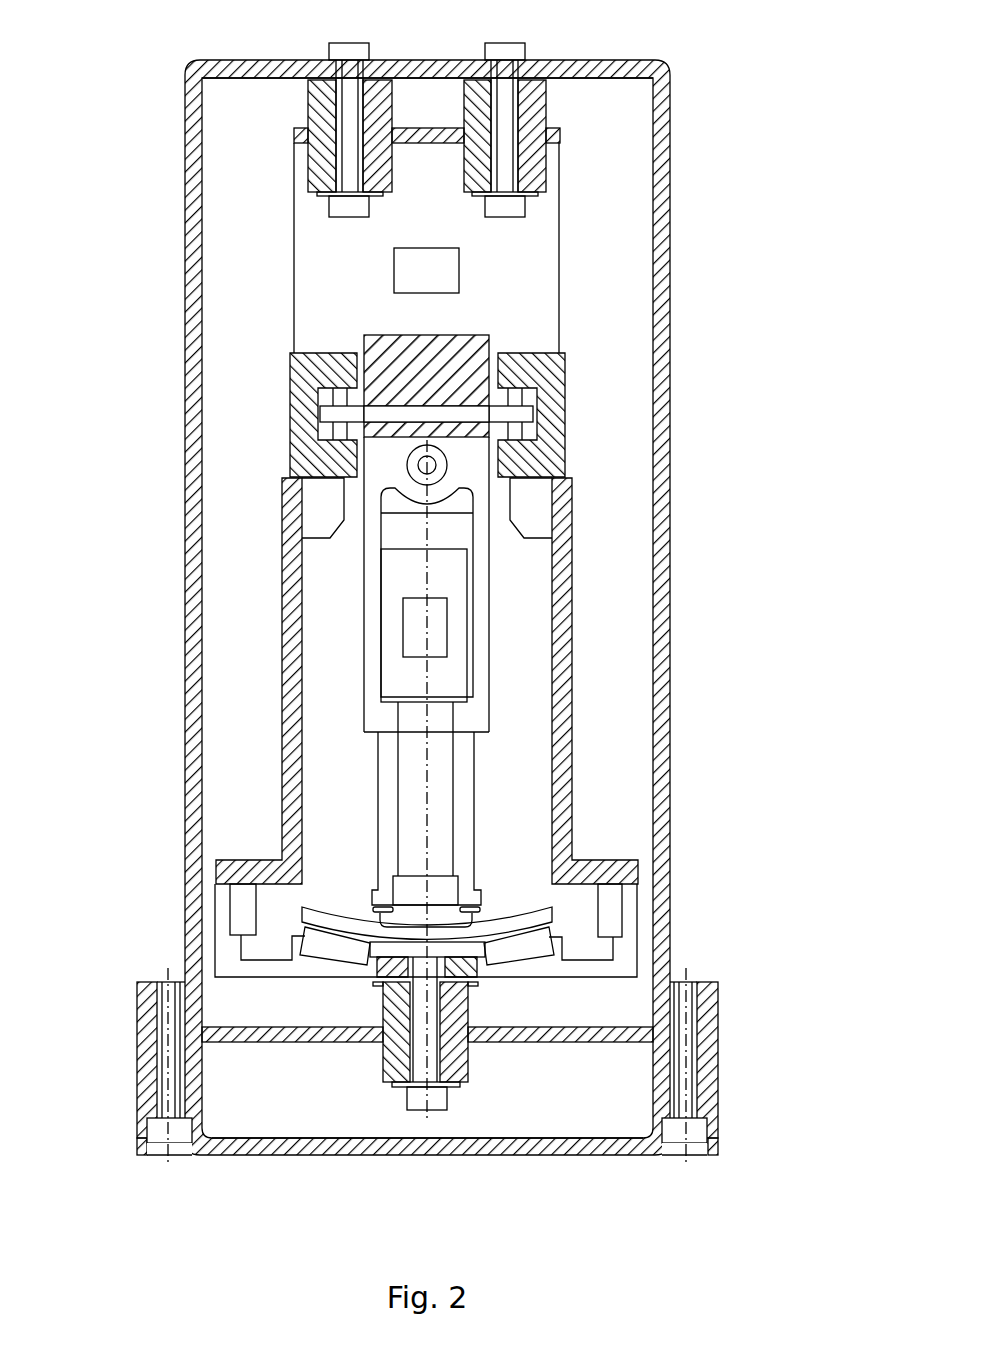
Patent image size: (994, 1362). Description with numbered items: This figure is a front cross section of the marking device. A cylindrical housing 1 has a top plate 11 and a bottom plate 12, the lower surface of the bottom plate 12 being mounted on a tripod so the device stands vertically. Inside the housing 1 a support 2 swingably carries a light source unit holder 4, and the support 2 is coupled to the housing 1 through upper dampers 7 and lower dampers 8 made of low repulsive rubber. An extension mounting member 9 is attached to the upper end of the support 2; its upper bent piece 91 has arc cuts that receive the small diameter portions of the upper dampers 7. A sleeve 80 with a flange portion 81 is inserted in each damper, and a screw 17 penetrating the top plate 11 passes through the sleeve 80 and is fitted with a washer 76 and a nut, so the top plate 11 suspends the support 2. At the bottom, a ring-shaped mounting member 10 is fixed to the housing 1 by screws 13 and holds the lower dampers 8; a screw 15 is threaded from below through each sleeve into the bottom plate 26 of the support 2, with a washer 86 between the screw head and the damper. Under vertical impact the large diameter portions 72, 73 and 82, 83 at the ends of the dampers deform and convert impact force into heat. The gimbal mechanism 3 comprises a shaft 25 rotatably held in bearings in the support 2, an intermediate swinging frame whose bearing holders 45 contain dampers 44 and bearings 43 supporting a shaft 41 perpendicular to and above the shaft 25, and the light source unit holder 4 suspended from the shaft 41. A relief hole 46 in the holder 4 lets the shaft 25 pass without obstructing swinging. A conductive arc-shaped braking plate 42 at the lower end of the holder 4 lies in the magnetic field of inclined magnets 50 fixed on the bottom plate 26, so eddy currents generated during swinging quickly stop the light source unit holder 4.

The cylindrical housing 1 is at (655, 300).
The support 2 is at (560, 660).
The gimbal mechanism 3 is at (442, 391).
The light source unit holder 4 is at (480, 605).
The upper damper 7 is at (283, 110).
The lower damper 8 is at (421, 1075).
The extension mounting member 9 is at (537, 312).
The mounting member 10 is at (293, 1043).
The top plate 11 is at (584, 68).
The bottom plate 12 is at (563, 1156).
The screw 13 is at (165, 1088).
The screw 15 is at (430, 1100).
The screw 17 is at (340, 50).
The shaft 25 is at (447, 467).
The bottom plate 26 is at (593, 992).
The shaft 41 is at (395, 410).
The braking plate 42 is at (335, 915).
The bearing 43 is at (300, 462).
The damper 44 is at (298, 447).
The bearing holder 45 is at (320, 353).
The relief hole 46 is at (410, 472).
The magnet 50 is at (313, 935).
The large diameter portion 72 is at (548, 122).
The large diameter portion 73 is at (548, 180).
The washer 76 is at (328, 197).
The sleeve 80 is at (318, 166).
The flange portion 81 is at (455, 1090).
The large diameter portion 82 is at (393, 1013).
The large diameter portion 83 is at (385, 1066).
The washer 86 is at (475, 985).
The bent piece 91 is at (430, 130).